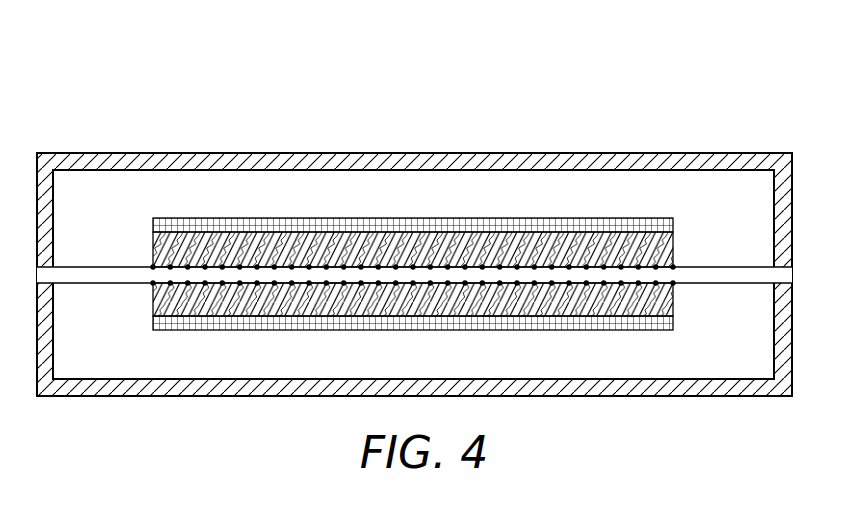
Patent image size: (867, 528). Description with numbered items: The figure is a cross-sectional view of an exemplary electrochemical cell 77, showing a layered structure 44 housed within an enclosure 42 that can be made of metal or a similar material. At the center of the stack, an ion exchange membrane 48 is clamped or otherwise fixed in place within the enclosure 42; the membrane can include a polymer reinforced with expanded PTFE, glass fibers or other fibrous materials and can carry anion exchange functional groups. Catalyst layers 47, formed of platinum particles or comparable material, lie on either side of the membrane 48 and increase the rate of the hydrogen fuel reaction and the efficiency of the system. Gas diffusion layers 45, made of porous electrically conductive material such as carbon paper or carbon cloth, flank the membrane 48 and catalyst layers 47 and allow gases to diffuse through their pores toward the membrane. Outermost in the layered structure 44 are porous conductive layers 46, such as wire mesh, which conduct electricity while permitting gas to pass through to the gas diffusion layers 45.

The enclosure 42 is at (110, 155).
The layered structure 44 is at (406, 273).
The gas diffusion layers 45 is at (675, 252).
The porous conductive layers 46 is at (153, 225).
The catalyst layers 47 is at (322, 265).
The ion exchange membrane 48 is at (90, 274).
The electrochemical cell 77 is at (651, 74).